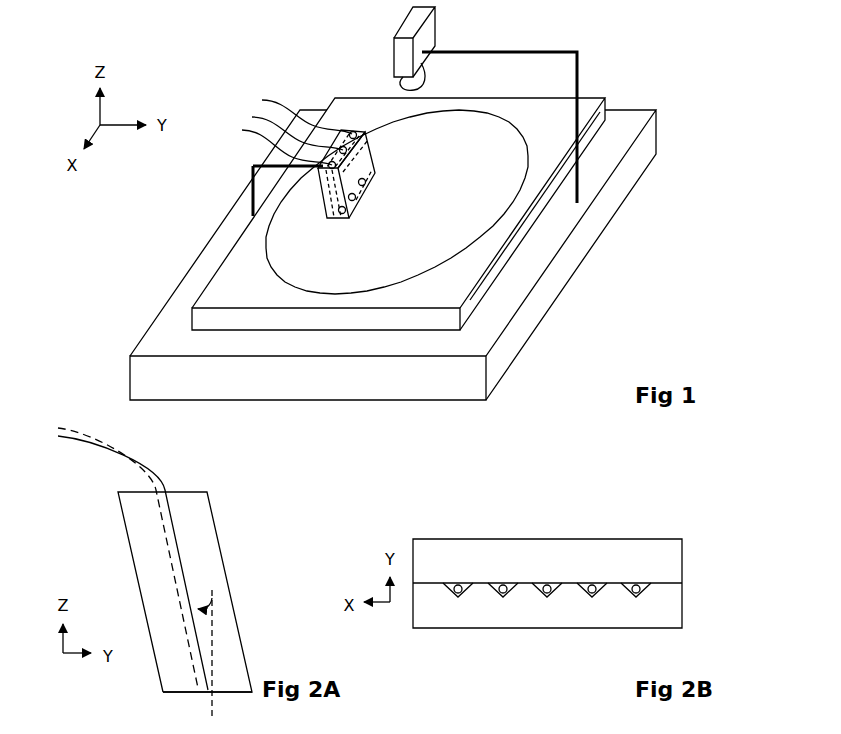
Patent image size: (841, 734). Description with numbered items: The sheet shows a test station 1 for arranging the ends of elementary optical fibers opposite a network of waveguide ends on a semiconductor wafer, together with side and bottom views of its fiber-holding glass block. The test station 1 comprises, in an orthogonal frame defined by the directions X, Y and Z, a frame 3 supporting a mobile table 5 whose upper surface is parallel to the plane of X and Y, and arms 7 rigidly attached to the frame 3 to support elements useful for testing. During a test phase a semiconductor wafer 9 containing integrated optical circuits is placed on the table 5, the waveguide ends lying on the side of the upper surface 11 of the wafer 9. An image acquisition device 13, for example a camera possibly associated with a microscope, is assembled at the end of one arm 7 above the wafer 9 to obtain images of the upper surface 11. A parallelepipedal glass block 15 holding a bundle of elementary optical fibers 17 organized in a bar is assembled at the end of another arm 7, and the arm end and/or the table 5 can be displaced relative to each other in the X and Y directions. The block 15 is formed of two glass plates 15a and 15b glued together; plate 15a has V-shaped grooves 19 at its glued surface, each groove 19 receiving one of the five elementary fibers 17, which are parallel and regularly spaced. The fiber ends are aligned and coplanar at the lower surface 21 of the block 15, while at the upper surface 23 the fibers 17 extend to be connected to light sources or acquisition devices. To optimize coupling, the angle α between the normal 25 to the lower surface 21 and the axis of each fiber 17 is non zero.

In FIG. 1, the test station 1 is at (268, 58).
In FIG. 1, the frame 3 is at (643, 145).
In FIG. 1, the mobile table 5 is at (587, 138).
In FIG. 1, the arm 7 is at (557, 52).
In FIG. 1, the semiconductor wafer 9 is at (514, 218).
In FIG. 1, the upper surface of wafer 11 is at (417, 259).
In FIG. 1, the image acquisition device 13 is at (430, 25).
In FIG. 1, the glass block 15 is at (324, 221).
In FIG. 2A, the glass block 15 is at (173, 587).
In FIG. 2B, the glass block 15 is at (570, 547).
In FIG. 2A, the glass plate 15a is at (140, 528).
In FIG. 2B, the glass plate 15a is at (670, 604).
In FIG. 2A, the glass plate 15b is at (192, 512).
In FIG. 2B, the glass plate 15b is at (670, 562).
In FIG. 1, the elementary optical fiber 17 is at (360, 150).
In FIG. 2A, the elementary optical fiber 17 is at (162, 559).
In FIG. 2B, the elementary optical fiber 17 is at (456, 582).
In FIG. 2B, the groove 19 is at (450, 592).
In FIG. 2A, the lower surface of block 21 is at (175, 692).
In FIG. 2B, the lower surface of block 21 is at (440, 539).
In FIG. 2A, the upper surface of block 23 is at (182, 492).
In FIG. 2A, the normal to lower surface 25 is at (213, 617).